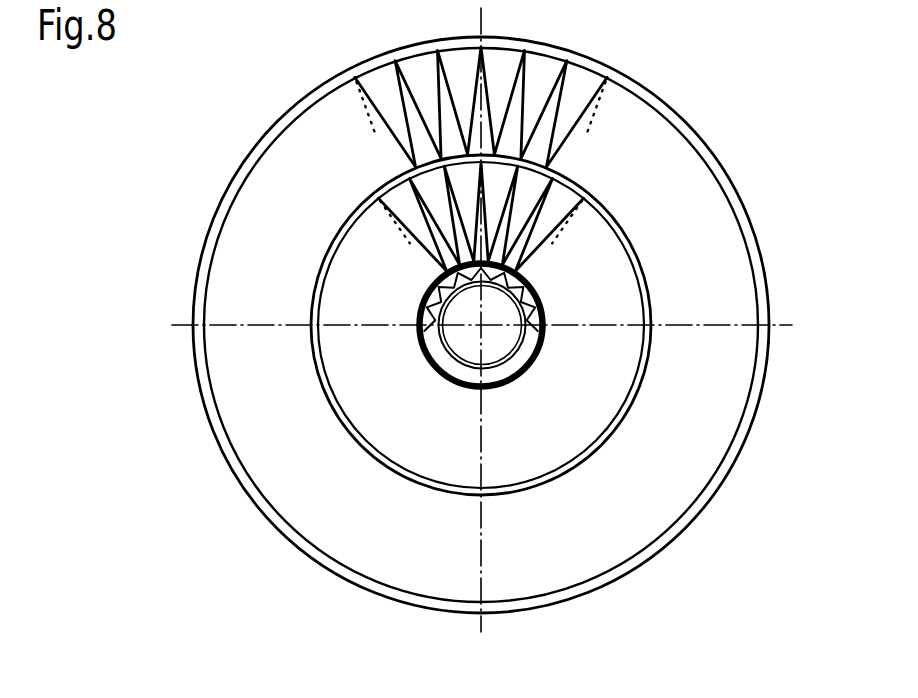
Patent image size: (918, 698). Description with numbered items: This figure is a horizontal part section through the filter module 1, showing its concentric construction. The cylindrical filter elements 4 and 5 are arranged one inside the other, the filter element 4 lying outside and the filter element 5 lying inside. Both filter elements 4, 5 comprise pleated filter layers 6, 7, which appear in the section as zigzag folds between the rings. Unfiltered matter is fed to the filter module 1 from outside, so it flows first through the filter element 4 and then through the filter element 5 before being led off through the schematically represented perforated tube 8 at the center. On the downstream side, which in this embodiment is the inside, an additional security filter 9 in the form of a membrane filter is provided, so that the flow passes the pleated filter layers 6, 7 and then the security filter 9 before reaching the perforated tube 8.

The filter module 1 is at (482, 317).
The filter element 4 is at (595, 403).
The filter element 5 is at (655, 483).
The pleated filter layer 6 is at (557, 207).
The pleated filter layer 7 is at (602, 110).
The perforated tube 8 is at (530, 348).
The security filter (membrane filter) 9 is at (538, 295).